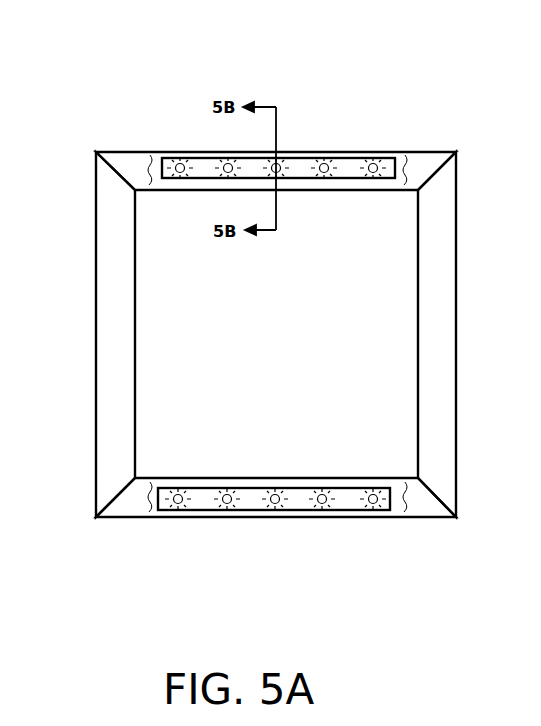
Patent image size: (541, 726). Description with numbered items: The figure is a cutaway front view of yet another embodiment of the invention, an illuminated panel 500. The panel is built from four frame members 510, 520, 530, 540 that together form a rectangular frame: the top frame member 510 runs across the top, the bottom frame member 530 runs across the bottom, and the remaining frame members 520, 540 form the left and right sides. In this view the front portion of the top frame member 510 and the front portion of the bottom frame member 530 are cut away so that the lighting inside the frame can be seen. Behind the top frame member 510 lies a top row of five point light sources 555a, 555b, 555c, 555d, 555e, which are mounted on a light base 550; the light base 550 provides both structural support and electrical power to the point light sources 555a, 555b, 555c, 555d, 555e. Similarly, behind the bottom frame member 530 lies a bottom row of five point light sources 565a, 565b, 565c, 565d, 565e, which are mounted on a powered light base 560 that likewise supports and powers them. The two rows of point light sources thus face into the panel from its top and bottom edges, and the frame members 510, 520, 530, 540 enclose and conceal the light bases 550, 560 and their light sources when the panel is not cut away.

The illuminated panel 500 is at (168, 60).
The top frame member 510 is at (452, 152).
The frame member 520 is at (96, 350).
The bottom frame member 530 is at (110, 518).
The frame member 540 is at (457, 350).
The light base 550 is at (302, 157).
The point light source 555a is at (179, 162).
The point light source 555b is at (226, 163).
The point light source 555c is at (279, 160).
The point light source 555d is at (326, 160).
The point light source 555e is at (378, 161).
The powered light base 560 is at (298, 511).
The point light source 565a is at (175, 507).
The point light source 565b is at (224, 507).
The point light source 565c is at (278, 507).
The point light source 565d is at (324, 507).
The point light source 565e is at (378, 507).